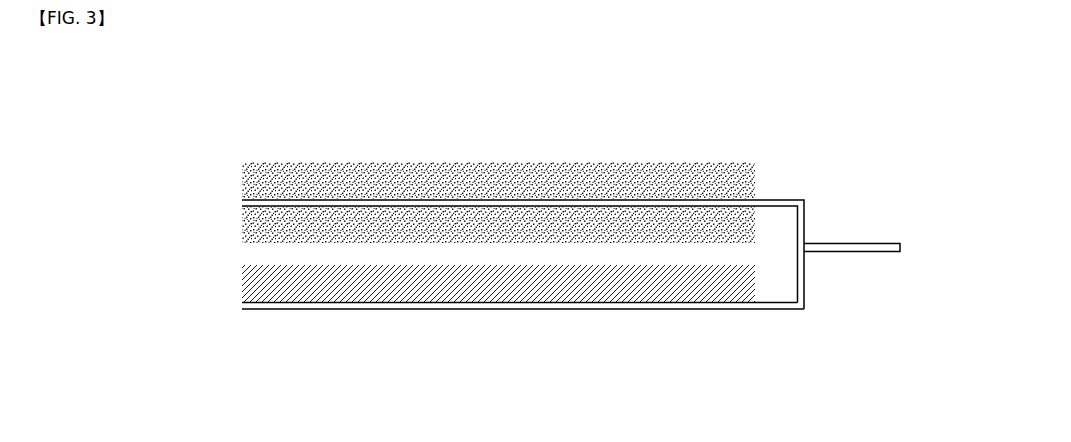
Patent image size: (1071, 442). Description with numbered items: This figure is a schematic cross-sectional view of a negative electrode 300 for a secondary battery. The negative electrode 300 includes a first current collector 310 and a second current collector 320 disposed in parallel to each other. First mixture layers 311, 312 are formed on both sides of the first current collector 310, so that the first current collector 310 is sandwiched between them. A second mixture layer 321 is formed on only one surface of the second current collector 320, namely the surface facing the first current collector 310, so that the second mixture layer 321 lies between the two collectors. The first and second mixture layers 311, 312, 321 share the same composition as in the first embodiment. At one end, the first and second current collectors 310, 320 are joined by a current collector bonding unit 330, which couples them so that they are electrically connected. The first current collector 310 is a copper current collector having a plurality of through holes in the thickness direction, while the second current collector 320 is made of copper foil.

The negative electrode 300 is at (158, 116).
The first current collector 310 is at (697, 200).
The first mixture layer 311 is at (242, 182).
The first mixture layer 312 is at (242, 222).
The second current collector 320 is at (700, 309).
The second mixture layer 321 is at (242, 285).
The current collector bonding unit 330 is at (852, 243).